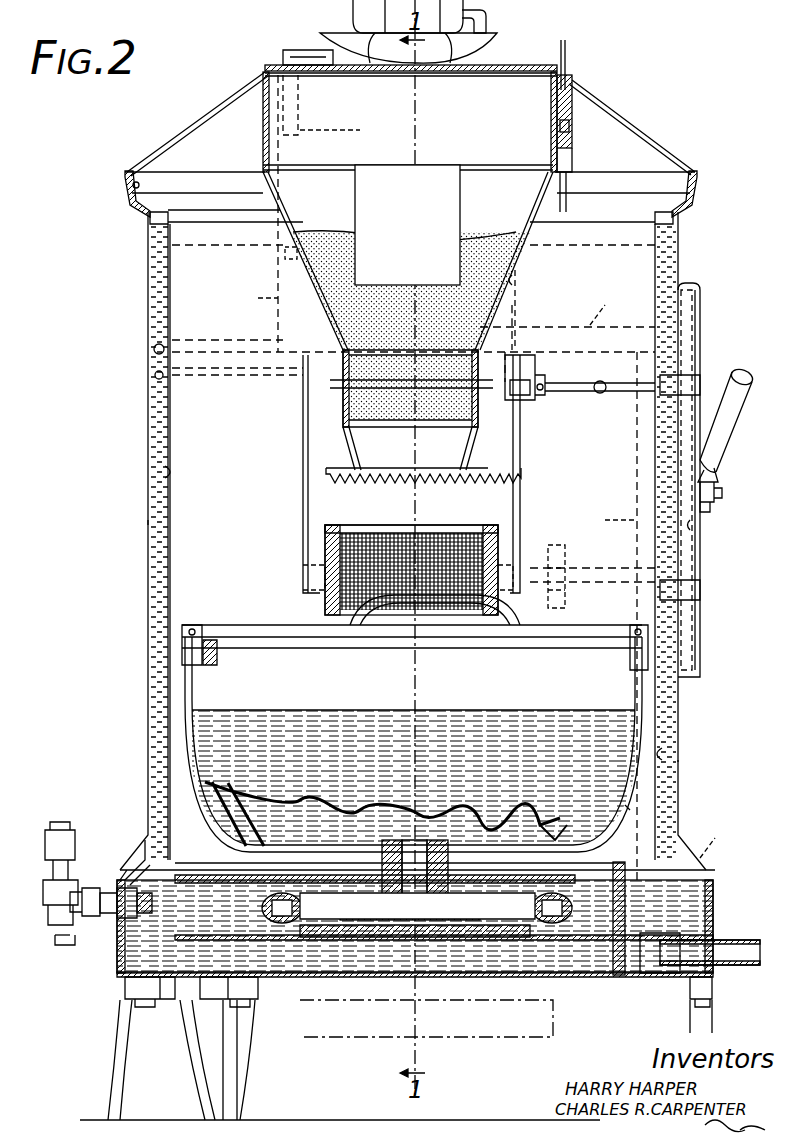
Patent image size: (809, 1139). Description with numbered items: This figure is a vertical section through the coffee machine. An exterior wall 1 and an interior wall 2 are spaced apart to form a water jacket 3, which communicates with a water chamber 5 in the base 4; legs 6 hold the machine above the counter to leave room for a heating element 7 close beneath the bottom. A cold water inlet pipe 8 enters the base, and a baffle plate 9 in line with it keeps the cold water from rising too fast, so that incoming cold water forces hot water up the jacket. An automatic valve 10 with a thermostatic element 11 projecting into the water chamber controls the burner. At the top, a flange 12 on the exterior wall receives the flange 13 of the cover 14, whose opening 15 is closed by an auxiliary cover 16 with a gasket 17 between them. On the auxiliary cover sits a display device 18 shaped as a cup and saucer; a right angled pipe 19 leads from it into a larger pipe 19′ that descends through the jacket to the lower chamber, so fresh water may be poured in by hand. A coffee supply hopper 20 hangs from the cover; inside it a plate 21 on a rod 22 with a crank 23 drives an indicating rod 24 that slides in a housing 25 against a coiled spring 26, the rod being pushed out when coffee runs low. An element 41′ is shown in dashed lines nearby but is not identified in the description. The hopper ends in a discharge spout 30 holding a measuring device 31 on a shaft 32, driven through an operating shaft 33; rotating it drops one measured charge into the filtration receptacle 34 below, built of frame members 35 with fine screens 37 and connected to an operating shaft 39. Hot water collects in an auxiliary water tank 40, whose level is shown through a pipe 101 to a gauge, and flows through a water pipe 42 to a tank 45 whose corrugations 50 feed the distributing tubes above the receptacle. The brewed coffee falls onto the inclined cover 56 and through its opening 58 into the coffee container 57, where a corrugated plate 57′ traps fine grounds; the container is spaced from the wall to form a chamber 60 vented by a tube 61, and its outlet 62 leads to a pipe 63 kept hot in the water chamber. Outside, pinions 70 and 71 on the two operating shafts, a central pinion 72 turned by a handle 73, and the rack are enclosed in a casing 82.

The exterior wall 1 is at (148, 448).
The interior wall 2 is at (168, 478).
The water jacket 3 is at (148, 523).
The base 4 is at (712, 882).
The water chamber 5 is at (724, 860).
The legs 6 is at (128, 1080).
The heating element 7 is at (362, 1036).
The cold water inlet pipe 8 is at (750, 940).
The baffle plate 9 is at (527, 945).
The automatic valve 10 is at (80, 870).
The thermostatic element 11 is at (150, 880).
The flange 12 is at (686, 199).
The flange 13 is at (690, 184).
The cover 14 is at (644, 140).
The opening 15 is at (572, 88).
The auxiliary cover 16 is at (524, 65).
The gasket 17 is at (270, 65).
The display device 18 is at (355, 14).
The right angled pipe 19 is at (298, 50).
The pipe 19′ is at (454, 477).
The coffee supply hopper 20 is at (534, 235).
The plate 21 is at (446, 189).
The rod 22 is at (484, 170).
The crank 23 is at (568, 202).
The indicating rod 24 is at (566, 48).
The housing 25 is at (572, 108).
The coiled spring 26 is at (572, 129).
The discharge spout 30 is at (474, 450).
The measuring device 31 is at (478, 412).
The shaft 32 is at (506, 382).
The operating shaft 33 is at (573, 385).
The filtration receptacle 34 is at (458, 522).
The frame members 35 is at (348, 528).
The screens 37 is at (340, 548).
The operating shaft 39 is at (544, 545).
The auxiliary water tank 40 is at (516, 308).
The stop 41′ is at (285, 262).
The water pipe 42 is at (154, 346).
The tank 45 is at (330, 478).
The corrugations 50 is at (404, 483).
The cover 56 is at (272, 635).
The coffee container 57 is at (195, 684).
The corrugated plate 57′ is at (315, 800).
The opening 58 is at (212, 642).
The chamber 60 is at (630, 810).
The tube 61 is at (616, 880).
The outlet 62 is at (445, 869).
The pipe 63 is at (518, 915).
The pinion 70 is at (690, 355).
The pinion 71 is at (692, 605).
The central pinion 72 is at (696, 523).
The handle 73 is at (735, 415).
The casing 82 is at (700, 548).
The pipe 101 is at (155, 376).